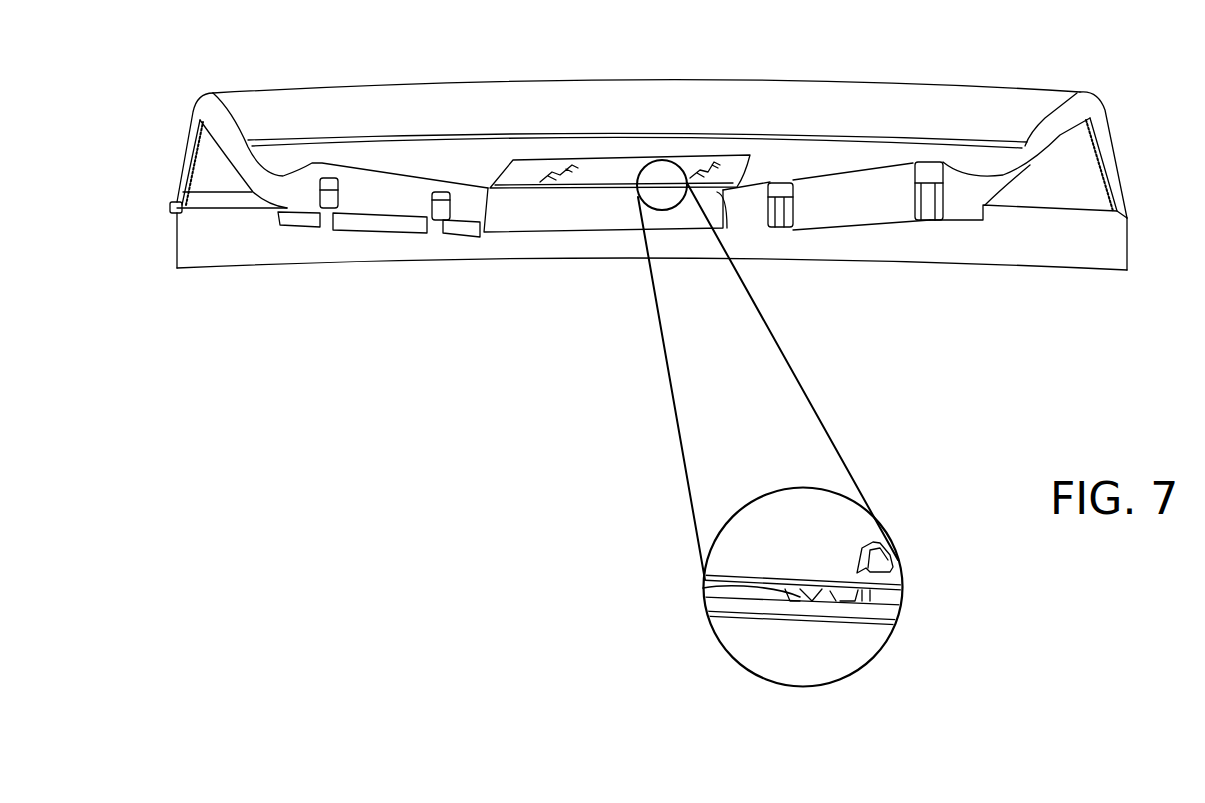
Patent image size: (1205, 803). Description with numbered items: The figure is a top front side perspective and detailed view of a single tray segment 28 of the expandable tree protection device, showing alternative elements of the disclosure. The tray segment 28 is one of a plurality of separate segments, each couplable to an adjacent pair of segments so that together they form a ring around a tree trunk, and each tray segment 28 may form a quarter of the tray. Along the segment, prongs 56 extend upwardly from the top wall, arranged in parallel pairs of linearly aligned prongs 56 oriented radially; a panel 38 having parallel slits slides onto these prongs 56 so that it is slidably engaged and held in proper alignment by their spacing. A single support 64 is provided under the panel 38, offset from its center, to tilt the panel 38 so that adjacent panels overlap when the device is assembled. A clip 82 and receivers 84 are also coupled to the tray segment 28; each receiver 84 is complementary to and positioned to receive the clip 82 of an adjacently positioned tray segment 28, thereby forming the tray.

The tray segment 28 is at (462, 170).
The panel 38 is at (608, 168).
The receiver 84 is at (323, 216).
The clip 82 is at (785, 197).
The prong 56 is at (898, 555).
The support 64 is at (703, 588).